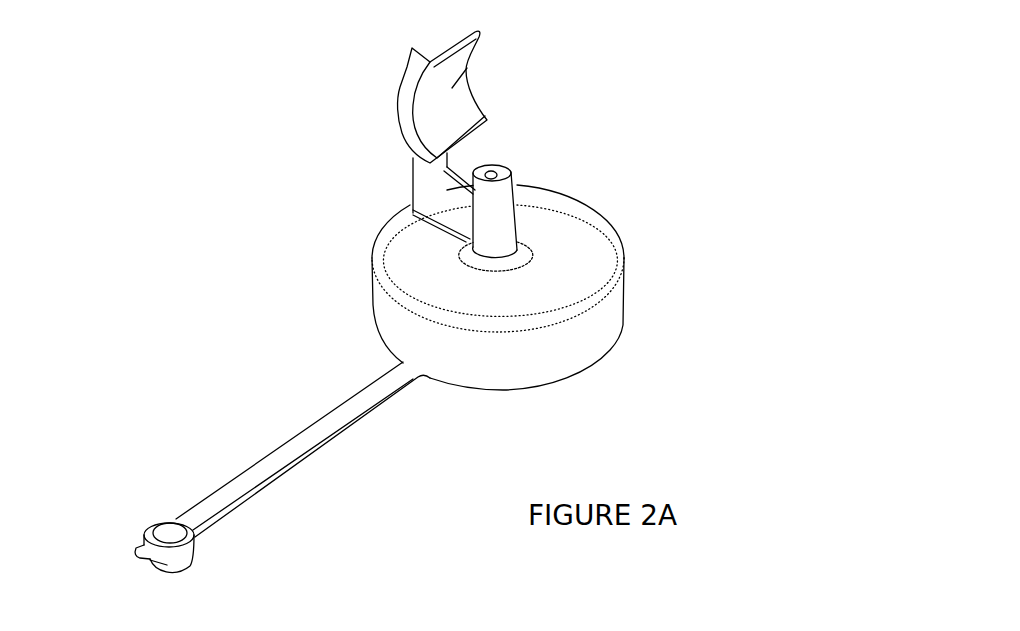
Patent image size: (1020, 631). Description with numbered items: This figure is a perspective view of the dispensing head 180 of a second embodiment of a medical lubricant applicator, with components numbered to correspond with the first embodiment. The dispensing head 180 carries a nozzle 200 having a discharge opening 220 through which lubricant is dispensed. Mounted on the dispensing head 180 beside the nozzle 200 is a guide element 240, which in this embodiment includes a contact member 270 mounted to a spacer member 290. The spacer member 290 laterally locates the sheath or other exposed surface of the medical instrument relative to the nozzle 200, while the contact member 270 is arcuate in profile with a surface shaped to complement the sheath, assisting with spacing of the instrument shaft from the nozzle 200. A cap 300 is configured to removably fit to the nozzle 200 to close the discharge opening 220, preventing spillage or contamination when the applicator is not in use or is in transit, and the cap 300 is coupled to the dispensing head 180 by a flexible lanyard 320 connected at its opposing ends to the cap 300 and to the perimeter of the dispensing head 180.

The dispensing head 180 is at (366, 286).
The nozzle 200 is at (500, 218).
The discharge opening 220 is at (495, 167).
The guide element 240 is at (392, 138).
The contact member 270 is at (472, 66).
The spacer member 290 is at (432, 188).
The cap 300 is at (146, 566).
The flexible lanyard 320 is at (310, 443).